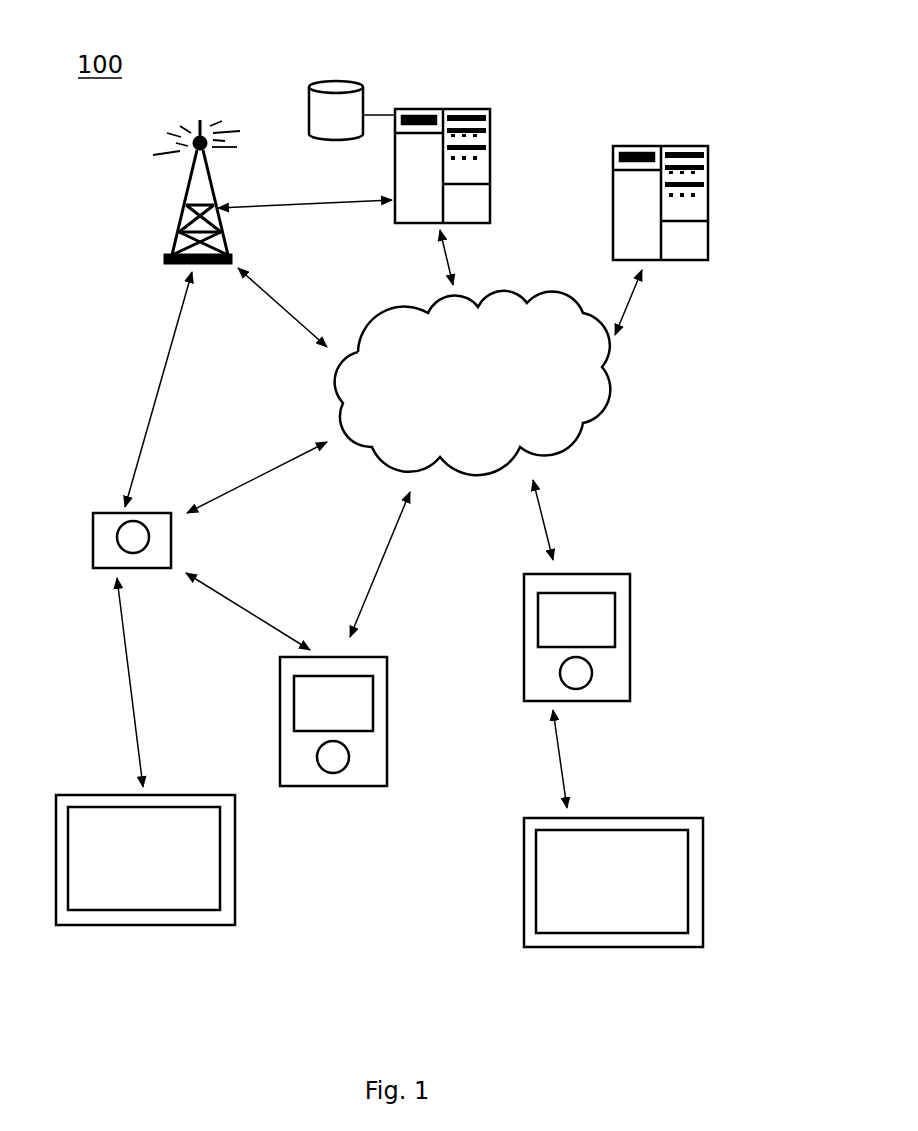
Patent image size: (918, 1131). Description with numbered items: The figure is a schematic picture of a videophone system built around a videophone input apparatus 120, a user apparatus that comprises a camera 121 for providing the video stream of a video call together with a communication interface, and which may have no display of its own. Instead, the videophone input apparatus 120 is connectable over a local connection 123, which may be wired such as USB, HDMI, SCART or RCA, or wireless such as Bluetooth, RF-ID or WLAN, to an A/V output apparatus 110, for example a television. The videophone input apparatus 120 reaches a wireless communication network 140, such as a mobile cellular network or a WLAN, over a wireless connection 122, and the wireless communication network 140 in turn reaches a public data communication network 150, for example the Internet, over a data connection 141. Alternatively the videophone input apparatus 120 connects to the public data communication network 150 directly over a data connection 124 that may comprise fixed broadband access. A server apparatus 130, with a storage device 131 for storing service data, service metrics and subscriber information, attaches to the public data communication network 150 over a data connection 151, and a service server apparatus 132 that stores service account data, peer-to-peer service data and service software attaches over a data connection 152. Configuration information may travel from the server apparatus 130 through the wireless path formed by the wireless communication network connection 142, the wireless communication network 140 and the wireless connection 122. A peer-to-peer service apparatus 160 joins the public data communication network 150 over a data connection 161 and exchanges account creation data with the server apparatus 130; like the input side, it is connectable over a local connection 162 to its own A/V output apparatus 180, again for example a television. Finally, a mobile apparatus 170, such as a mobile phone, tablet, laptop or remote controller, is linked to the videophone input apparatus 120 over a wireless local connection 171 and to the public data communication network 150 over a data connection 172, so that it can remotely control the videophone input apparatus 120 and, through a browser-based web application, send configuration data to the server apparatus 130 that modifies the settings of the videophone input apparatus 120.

The A/V output apparatus 110 is at (131, 925).
The videophone input apparatus 120 is at (181, 569).
The camera 121 is at (141, 562).
The wireless connection 122 is at (150, 378).
The local connection 123 is at (138, 690).
The data connection 124 is at (262, 470).
The server apparatus 130 is at (482, 108).
The storage device 131 is at (339, 78).
The service server apparatus 132 is at (652, 146).
The wireless communication network 140 is at (188, 190).
The data connection 141 is at (285, 302).
The wireless communication network connection 142 is at (315, 201).
The public data communication network 150 is at (602, 422).
The data connection 151 is at (455, 256).
The data connection 152 is at (626, 305).
The peer-to-peer service apparatus 160 is at (631, 631).
The data connection 161 is at (557, 529).
The local connection 162 is at (564, 758).
The mobile apparatus 170 is at (340, 787).
The local connection 171 is at (248, 610).
The data connection 172 is at (384, 576).
The A/V output apparatus 180 is at (600, 947).